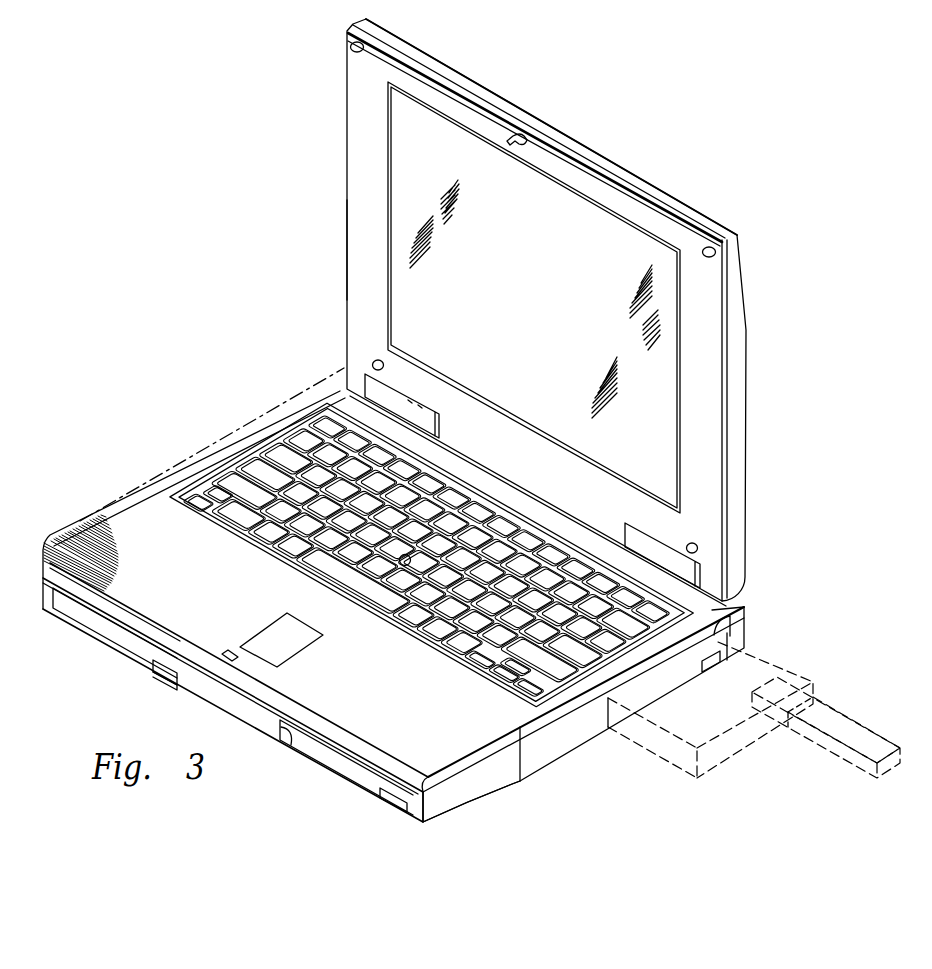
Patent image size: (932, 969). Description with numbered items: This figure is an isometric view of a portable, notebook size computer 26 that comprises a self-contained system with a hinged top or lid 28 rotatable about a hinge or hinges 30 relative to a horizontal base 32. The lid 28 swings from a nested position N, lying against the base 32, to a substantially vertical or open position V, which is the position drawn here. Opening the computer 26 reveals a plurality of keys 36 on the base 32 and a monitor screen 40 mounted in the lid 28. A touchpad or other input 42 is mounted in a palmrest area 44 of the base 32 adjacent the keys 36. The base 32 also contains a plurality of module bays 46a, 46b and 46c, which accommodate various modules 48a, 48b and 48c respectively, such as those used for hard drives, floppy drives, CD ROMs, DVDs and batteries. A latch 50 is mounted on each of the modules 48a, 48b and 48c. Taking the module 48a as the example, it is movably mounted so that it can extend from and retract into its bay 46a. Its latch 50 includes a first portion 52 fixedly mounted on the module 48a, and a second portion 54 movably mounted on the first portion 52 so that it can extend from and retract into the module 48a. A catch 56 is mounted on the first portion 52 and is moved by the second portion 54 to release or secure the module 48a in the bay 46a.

The portable computer 26 is at (224, 234).
The lid 28 is at (350, 188).
The open position V is at (346, 296).
The nested position N is at (130, 488).
The hinge 30 is at (641, 546).
The base 32 is at (538, 758).
The keys 36 is at (236, 482).
The monitor screen 40 is at (536, 405).
The touchpad 42 is at (302, 650).
The palmrest area 44 is at (450, 750).
The module bay 46a is at (730, 622).
The module bay 46b is at (290, 738).
The module bay 46c is at (165, 658).
The module 48a is at (665, 752).
The module 48b is at (366, 782).
The module 48c is at (105, 633).
The latch 50 is at (156, 682).
The first portion 52 is at (749, 712).
The second portion 54 is at (862, 738).
The catch 56 is at (822, 690).